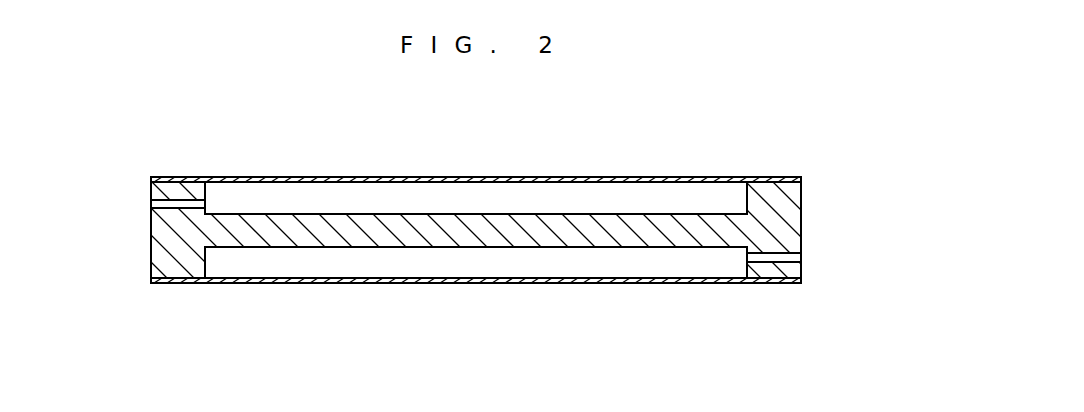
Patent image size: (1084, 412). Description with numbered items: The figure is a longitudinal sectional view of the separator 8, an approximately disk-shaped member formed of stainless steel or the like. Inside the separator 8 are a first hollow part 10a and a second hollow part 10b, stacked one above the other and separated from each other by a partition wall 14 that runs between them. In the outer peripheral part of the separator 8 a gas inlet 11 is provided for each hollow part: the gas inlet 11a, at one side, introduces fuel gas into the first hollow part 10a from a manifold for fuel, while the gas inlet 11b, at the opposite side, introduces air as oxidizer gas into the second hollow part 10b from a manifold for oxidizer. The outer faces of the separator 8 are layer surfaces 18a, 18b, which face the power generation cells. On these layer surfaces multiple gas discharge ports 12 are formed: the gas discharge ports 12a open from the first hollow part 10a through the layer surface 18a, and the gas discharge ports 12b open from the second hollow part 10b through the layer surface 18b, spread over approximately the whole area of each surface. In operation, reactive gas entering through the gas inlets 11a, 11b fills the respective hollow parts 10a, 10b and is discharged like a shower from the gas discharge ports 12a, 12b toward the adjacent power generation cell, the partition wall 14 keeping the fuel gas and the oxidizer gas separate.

The separator 8 is at (763, 158).
The first hollow part 10a is at (262, 198).
The second hollow part 10b is at (232, 263).
The gas inlet 11 is at (493, 231).
The gas inlet 11a is at (158, 204).
The gas inlet 11b is at (797, 256).
The gas discharge port 12 is at (476, 228).
The gas discharge ports 12a is at (440, 150).
The gas discharge ports 12b is at (315, 283).
The partition wall 14 is at (330, 230).
The layer surface 18a is at (683, 178).
The layer surface 18b is at (695, 283).